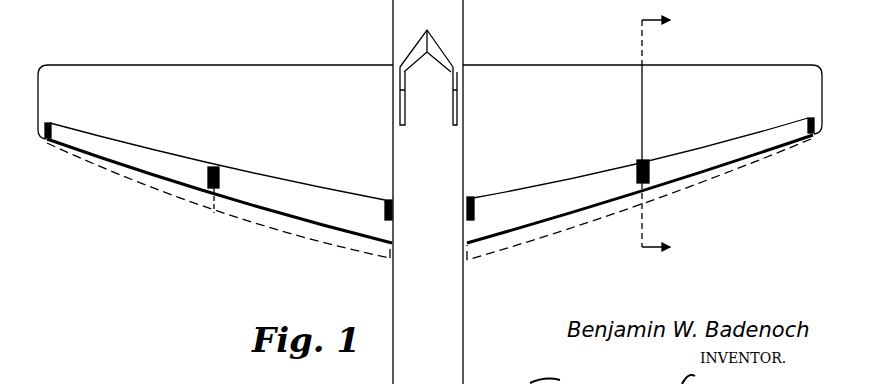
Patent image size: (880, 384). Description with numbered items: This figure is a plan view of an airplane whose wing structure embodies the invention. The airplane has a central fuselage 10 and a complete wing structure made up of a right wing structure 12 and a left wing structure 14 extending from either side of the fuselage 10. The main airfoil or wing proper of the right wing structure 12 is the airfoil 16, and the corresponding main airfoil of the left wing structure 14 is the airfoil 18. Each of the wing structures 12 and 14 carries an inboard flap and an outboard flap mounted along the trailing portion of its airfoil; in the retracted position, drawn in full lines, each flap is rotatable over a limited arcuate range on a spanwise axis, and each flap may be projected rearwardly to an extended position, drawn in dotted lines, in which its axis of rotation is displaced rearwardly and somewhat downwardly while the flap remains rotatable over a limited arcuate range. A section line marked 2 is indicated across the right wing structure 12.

The fuselage 10 is at (450, 20).
The right wing structure 12 is at (642, 135).
The left wing structure 14 is at (215, 140).
The main airfoil of the right wing structure 16 is at (710, 73).
The main airfoil of the left wing structure 18 is at (113, 78).
The section line 2- 2 is at (669, 136).